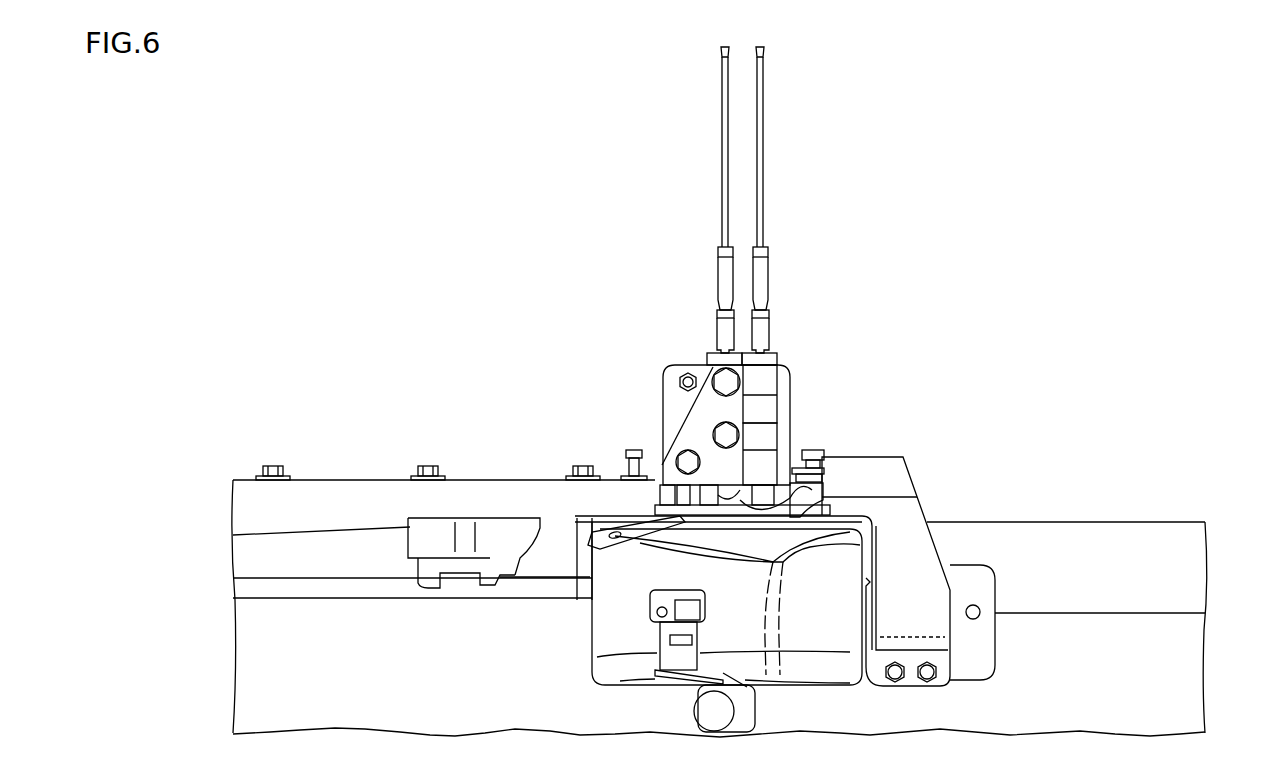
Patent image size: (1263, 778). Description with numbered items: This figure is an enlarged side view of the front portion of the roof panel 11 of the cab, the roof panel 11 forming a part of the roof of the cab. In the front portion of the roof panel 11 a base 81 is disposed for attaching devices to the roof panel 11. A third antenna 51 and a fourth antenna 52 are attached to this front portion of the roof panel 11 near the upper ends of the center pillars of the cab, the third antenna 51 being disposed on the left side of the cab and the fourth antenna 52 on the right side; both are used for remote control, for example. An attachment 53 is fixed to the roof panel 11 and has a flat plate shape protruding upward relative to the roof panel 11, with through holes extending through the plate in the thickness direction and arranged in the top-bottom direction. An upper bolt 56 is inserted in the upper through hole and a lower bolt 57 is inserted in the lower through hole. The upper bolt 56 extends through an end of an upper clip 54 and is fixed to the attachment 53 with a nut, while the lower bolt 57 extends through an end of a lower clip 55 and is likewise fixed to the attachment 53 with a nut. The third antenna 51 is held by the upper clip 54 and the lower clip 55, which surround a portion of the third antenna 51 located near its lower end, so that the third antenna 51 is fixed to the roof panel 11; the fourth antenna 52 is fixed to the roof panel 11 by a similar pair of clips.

The roof panel 11 is at (1105, 520).
The third antenna 51 is at (764, 103).
The fourth antenna 52 is at (722, 103).
The attachment 53 is at (705, 410).
The upper clip 54 is at (790, 383).
The lower clip 55 is at (790, 434).
The upper bolt 56 is at (678, 383).
The lower bolt 57 is at (712, 437).
The base 81 is at (470, 492).